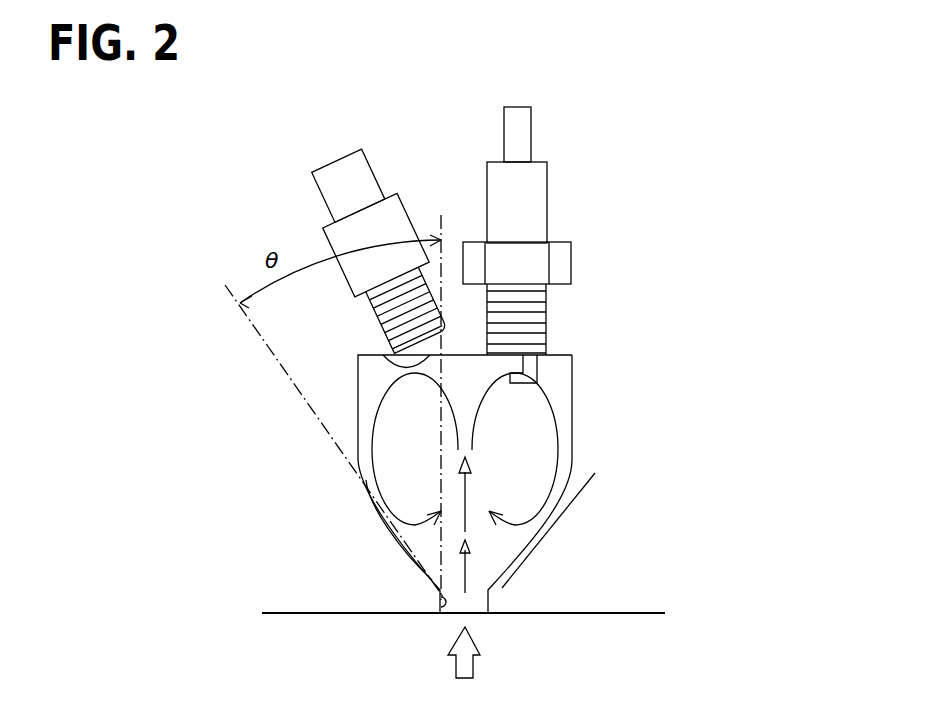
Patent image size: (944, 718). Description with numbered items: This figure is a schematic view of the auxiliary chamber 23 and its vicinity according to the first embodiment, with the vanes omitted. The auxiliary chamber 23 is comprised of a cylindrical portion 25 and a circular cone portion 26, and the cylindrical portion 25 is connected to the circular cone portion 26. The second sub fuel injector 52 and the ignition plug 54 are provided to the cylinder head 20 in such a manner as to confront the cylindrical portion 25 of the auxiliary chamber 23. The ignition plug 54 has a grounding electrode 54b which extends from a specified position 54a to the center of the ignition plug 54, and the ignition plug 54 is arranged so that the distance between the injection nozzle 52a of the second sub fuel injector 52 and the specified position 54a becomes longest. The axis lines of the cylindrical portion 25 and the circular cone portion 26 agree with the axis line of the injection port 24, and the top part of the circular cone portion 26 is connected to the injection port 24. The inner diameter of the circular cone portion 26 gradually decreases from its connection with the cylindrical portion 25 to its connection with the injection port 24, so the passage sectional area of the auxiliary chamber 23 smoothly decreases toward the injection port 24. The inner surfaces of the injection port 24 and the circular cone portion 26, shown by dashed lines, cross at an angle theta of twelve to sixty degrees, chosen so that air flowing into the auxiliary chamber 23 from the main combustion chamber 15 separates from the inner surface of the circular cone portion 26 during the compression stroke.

The main combustion chamber 15 is at (370, 648).
The cylinder head 20 is at (565, 597).
The auxiliary chamber 23 is at (407, 449).
The injection port 24 is at (440, 600).
The cylindrical portion 25 is at (595, 355).
The circular cone portion 26 is at (556, 540).
The second sub fuel injector 52 is at (337, 160).
The injection nozzle 52a is at (387, 357).
The ignition plug 54 is at (550, 203).
The specified position 54a is at (528, 355).
The grounding electrode 54b is at (537, 371).